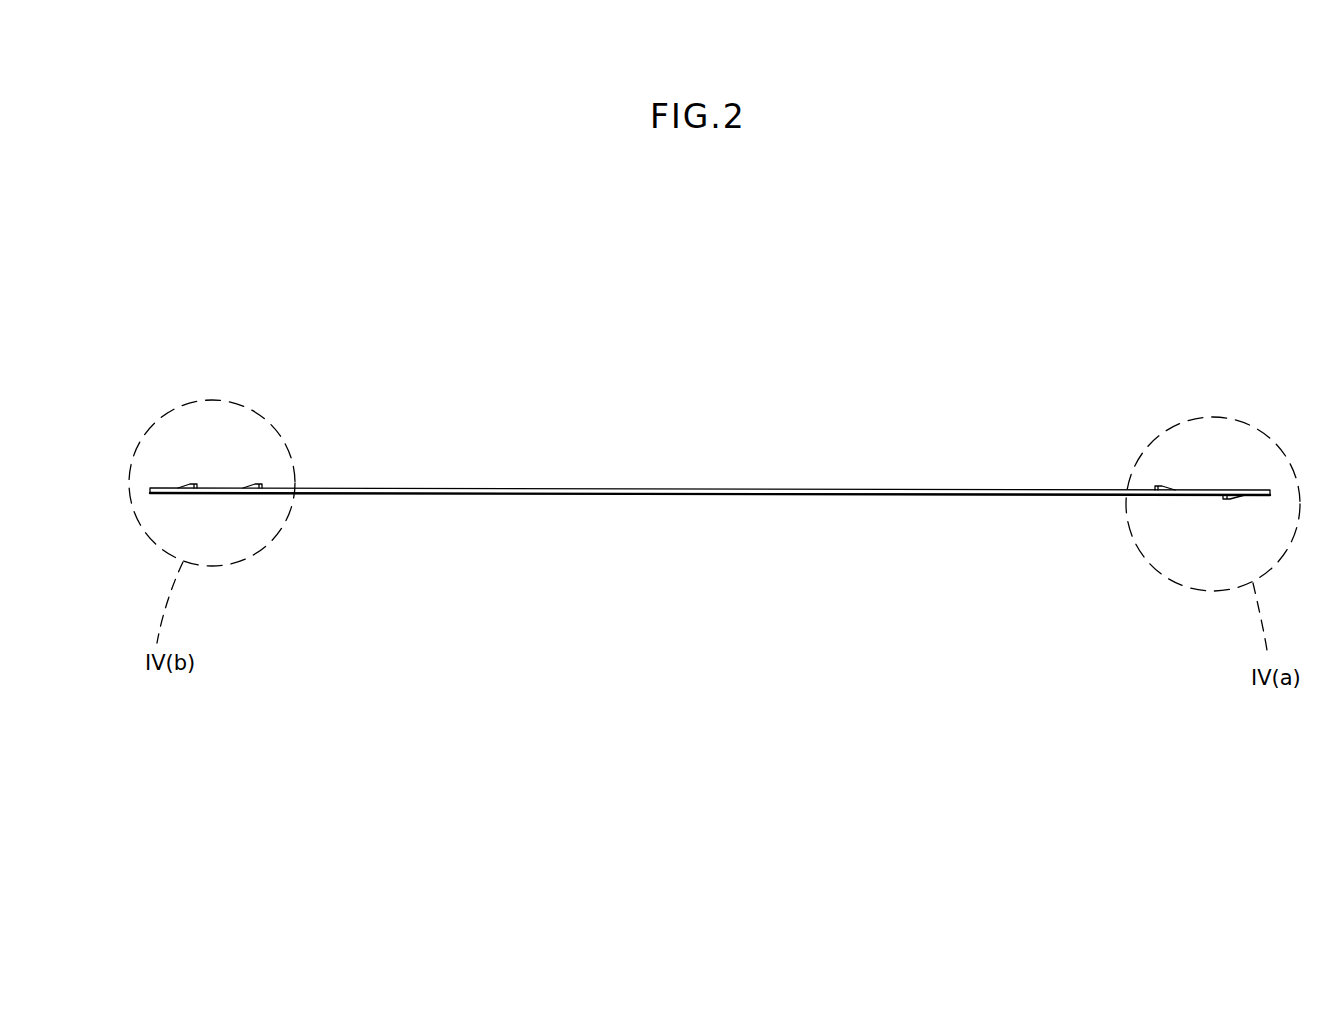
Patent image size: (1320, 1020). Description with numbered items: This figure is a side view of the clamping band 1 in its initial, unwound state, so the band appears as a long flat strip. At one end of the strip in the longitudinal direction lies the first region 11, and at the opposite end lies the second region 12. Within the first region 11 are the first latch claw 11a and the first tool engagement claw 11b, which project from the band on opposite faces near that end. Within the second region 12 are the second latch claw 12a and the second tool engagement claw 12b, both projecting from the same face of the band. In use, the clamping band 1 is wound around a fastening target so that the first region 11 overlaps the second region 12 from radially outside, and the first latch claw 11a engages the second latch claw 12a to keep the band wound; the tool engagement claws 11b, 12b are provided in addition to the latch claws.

The clamping band 1 is at (1040, 381).
The first region 11 is at (1184, 469).
The first latch claw 11a is at (1237, 503).
The first tool engagement claw 11b is at (1152, 473).
The second region 12 is at (222, 407).
The second latch claw 12a is at (177, 478).
The second tool engagement claw 12b is at (260, 478).